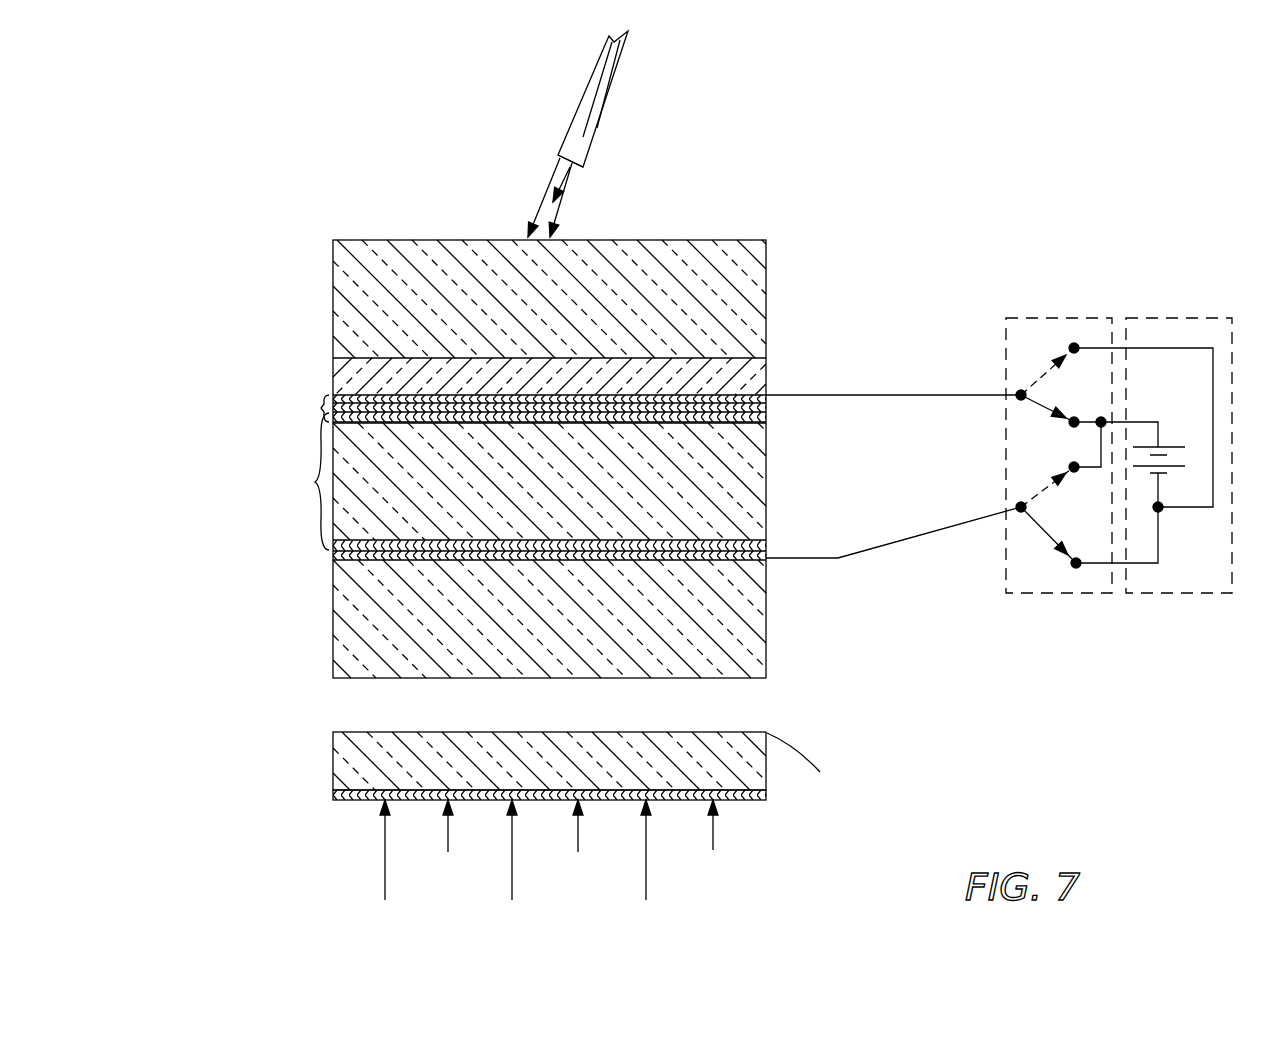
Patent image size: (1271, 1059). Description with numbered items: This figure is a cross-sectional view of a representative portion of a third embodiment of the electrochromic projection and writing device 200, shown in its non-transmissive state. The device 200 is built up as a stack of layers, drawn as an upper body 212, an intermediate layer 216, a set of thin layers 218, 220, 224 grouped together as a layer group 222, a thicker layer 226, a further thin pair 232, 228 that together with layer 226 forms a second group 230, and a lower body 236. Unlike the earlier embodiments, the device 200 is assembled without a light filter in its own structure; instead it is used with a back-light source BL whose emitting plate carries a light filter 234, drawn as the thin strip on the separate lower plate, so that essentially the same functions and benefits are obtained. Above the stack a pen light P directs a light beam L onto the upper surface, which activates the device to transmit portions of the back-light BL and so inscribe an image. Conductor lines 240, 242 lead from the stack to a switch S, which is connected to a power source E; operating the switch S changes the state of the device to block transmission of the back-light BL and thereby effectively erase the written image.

The electrochromic projection and writing device 200 is at (222, 234).
The substrate 212 is at (768, 262).
The layer 216 is at (768, 370).
The electrode layer 218 is at (768, 396).
The photosensitive layer 220 is at (768, 402).
The photosensor layers 222 is at (322, 400).
The electrode layer 224 is at (767, 413).
The display medium layer 226 is at (768, 468).
The electrode layer 228 is at (767, 552).
The display layers 230 is at (318, 482).
The electrode 232 is at (767, 545).
The light filter 234 is at (767, 798).
The rear substrate 236 is at (767, 632).
The wire 240 is at (1000, 393).
The wire 242 is at (962, 518).
The pen light P is at (613, 97).
The light beam L is at (579, 210).
The switch S is at (1008, 318).
The power source E is at (1200, 318).
The back light BL is at (646, 832).